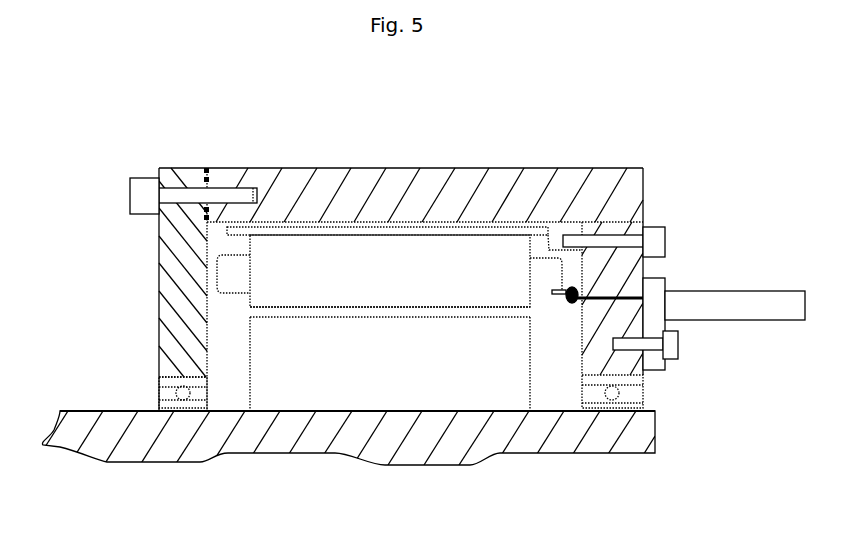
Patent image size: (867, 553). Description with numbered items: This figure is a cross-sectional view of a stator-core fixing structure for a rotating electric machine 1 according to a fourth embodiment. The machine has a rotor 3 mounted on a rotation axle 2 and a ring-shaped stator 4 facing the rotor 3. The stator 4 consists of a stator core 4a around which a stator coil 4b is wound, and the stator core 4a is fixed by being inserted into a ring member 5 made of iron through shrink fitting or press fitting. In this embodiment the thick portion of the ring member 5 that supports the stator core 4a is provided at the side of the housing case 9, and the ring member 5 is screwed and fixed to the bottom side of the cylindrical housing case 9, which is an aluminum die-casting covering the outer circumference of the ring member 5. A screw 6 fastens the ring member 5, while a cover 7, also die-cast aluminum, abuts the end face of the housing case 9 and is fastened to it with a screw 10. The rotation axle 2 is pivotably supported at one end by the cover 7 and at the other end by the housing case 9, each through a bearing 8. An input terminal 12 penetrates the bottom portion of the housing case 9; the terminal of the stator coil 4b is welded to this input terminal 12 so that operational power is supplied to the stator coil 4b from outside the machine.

The rotating electric machine 1 is at (297, 145).
The rotation axle 2 is at (500, 438).
The rotor 3 is at (350, 388).
The stator 4 is at (350, 263).
The stator core 4a is at (483, 290).
The stator coil 4b is at (548, 288).
The ring member 5 is at (463, 233).
The screw 6 is at (665, 248).
The cover 7 is at (173, 267).
The bearing 8 is at (160, 392).
The housing case 9 is at (612, 188).
The screw 10 is at (142, 203).
The input terminal 12 is at (727, 303).